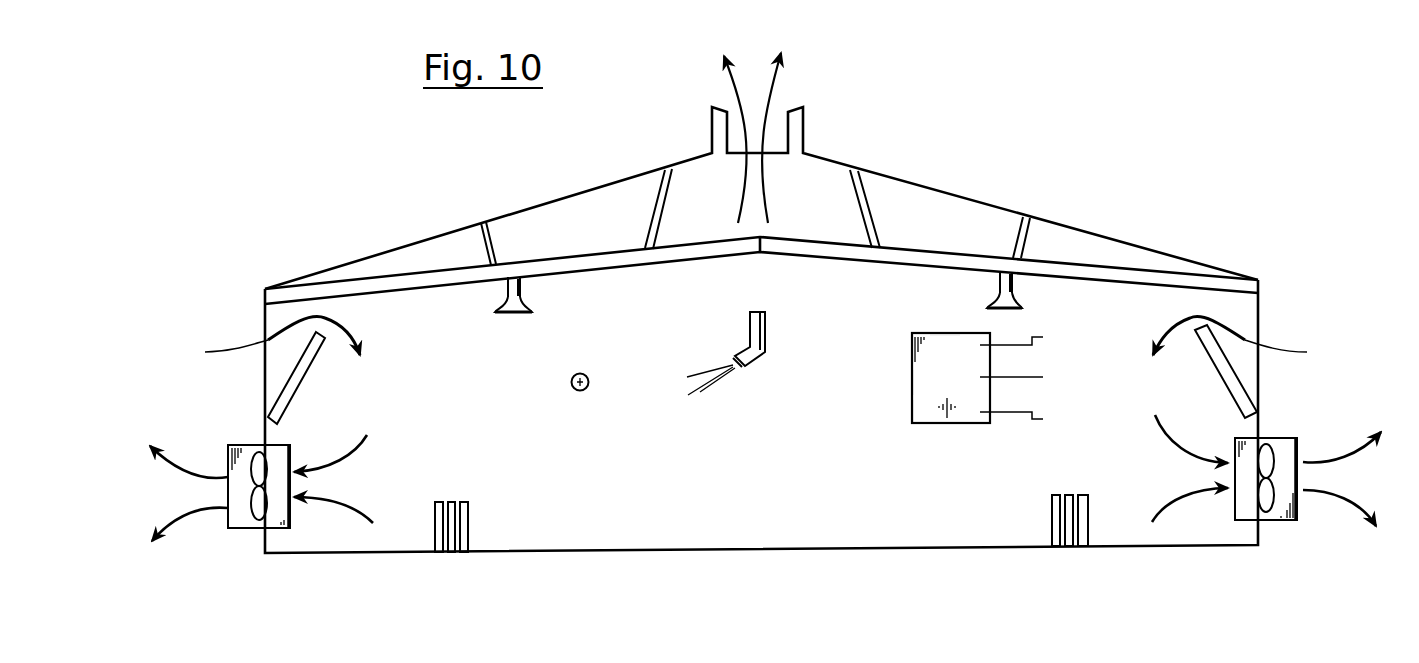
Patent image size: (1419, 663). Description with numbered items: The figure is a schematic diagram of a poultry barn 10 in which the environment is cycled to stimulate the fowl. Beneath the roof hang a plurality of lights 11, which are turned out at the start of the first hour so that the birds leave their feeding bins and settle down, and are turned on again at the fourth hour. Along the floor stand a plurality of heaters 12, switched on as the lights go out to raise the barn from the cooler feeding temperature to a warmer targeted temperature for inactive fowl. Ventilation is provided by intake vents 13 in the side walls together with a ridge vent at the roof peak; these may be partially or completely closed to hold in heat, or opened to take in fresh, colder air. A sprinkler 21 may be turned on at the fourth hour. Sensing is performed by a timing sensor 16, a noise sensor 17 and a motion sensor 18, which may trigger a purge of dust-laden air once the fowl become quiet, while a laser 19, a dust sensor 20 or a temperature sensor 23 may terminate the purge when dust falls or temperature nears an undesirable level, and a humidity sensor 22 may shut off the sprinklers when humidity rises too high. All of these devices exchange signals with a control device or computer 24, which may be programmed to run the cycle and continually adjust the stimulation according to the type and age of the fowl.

The poultry barn 10 is at (1024, 162).
The lights 11 is at (530, 304).
The heaters 12 is at (470, 528).
The intake vents 13 is at (300, 387).
The timing sensor 16 is at (1026, 339).
The noise sensor 17 is at (1026, 377).
The motion sensor 18 is at (1026, 420).
The laser 19 is at (572, 385).
The dust sensor 20 is at (967, 415).
The sprinklers 21 is at (768, 337).
The humidity sensor 22 is at (925, 417).
The temperature sensor 23 is at (927, 383).
The control device or computer 24 is at (947, 340).